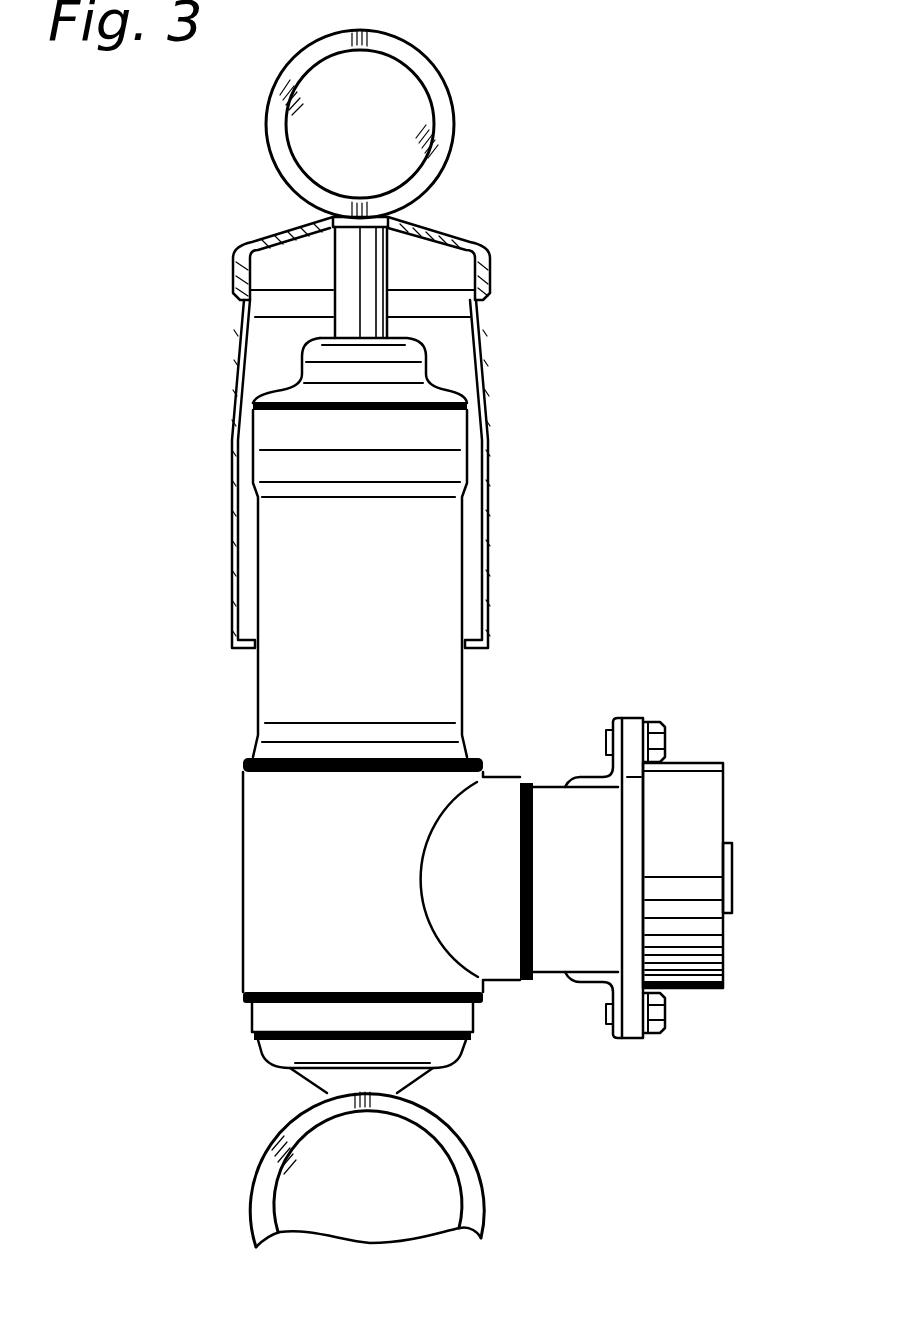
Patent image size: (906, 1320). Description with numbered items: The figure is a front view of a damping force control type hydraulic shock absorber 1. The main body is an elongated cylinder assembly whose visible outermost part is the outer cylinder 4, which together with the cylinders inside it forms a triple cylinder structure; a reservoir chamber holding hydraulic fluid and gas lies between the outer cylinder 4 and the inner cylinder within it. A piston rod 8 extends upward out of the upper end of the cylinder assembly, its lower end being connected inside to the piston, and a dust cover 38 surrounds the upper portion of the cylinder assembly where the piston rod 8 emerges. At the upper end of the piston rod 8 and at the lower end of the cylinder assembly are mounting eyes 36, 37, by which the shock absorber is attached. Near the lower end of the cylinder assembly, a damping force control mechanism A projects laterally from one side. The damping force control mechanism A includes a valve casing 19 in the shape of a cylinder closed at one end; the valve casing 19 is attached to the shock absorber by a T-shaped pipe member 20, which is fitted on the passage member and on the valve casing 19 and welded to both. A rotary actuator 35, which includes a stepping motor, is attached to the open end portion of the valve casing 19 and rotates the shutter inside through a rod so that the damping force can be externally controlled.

The hydraulic shock absorber 1 is at (605, 222).
The mounting eye 36 is at (447, 98).
The dust cover 38 is at (485, 245).
The piston rod 8 is at (388, 325).
The outer cylinder 4 is at (460, 688).
The T-shaped pipe member 20 is at (255, 877).
The valve casing 19 is at (551, 960).
The rotary actuator 35 is at (715, 808).
The mounting eye 37 is at (260, 1174).
The damping force control mechanism A is at (645, 1058).